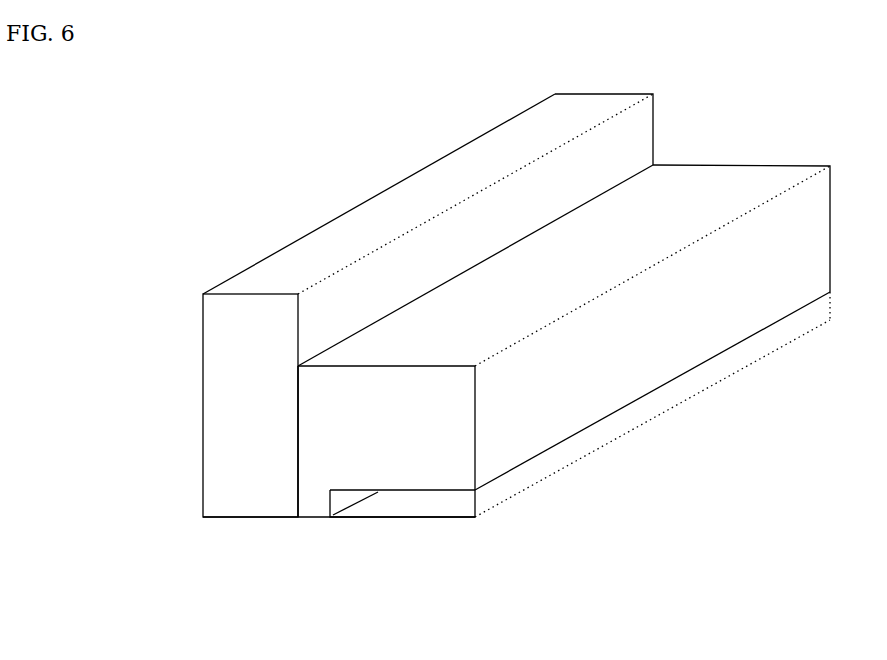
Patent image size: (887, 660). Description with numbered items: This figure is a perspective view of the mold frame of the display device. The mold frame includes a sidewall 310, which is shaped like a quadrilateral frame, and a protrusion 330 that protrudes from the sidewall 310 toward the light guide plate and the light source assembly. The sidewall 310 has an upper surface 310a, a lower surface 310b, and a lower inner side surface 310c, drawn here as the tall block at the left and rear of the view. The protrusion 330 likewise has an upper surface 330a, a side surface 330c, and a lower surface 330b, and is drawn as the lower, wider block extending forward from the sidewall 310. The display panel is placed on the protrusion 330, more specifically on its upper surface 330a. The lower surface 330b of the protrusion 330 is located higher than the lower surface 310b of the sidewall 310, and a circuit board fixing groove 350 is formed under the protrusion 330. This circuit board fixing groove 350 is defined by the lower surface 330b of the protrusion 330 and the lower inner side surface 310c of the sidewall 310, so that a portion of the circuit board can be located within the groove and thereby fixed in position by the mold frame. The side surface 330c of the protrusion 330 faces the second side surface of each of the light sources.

The sidewall 310 is at (225, 414).
The upper surface 310a is at (460, 175).
The lower surface 310b is at (267, 517).
The lower inner side surface 310c is at (332, 498).
The protrusion 330 is at (392, 425).
The upper surface 330a is at (730, 185).
The lower surface 330b is at (412, 492).
The side surface 330c is at (703, 310).
The circuit board fixing groove 350 is at (437, 497).